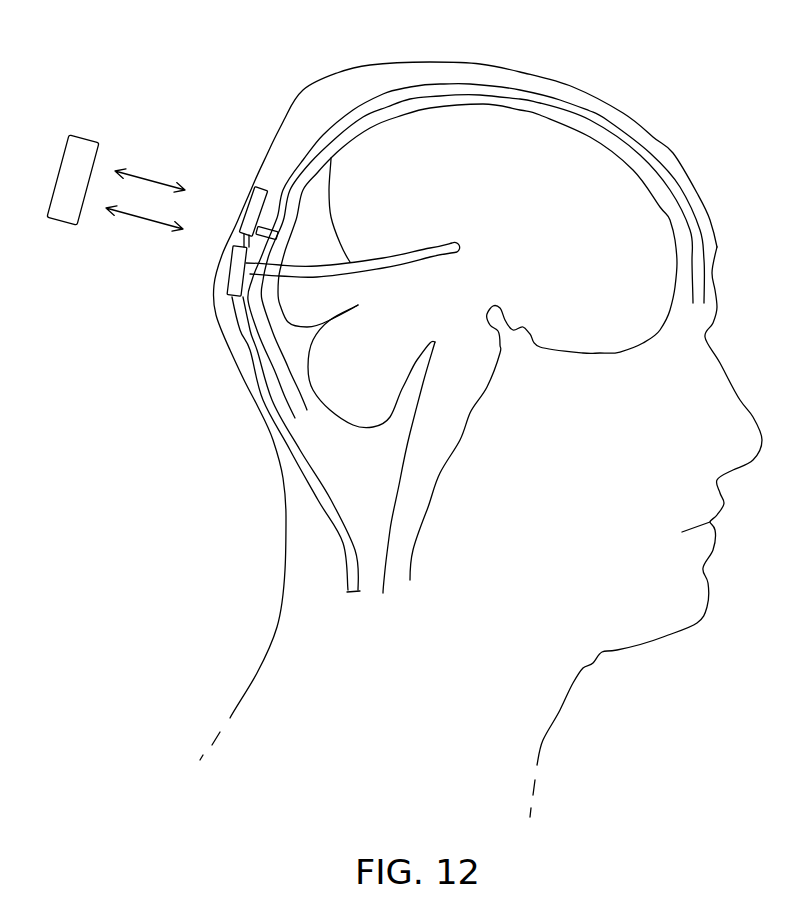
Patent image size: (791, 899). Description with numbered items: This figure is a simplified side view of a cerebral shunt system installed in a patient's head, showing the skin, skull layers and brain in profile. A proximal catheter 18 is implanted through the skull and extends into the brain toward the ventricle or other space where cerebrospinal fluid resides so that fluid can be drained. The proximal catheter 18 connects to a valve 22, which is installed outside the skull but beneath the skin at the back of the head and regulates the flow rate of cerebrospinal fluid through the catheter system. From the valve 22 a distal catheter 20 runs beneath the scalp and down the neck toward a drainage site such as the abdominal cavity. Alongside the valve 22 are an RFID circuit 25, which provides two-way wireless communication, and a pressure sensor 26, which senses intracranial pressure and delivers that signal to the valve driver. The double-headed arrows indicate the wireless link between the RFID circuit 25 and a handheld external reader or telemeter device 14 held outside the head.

The external reader or telemeter device 14 is at (60, 172).
The proximal catheter 18 is at (331, 158).
The distal catheter 20 is at (327, 510).
The valve 22 is at (231, 267).
The RFID circuit 25 is at (248, 210).
The pressure sensor 26 is at (273, 225).